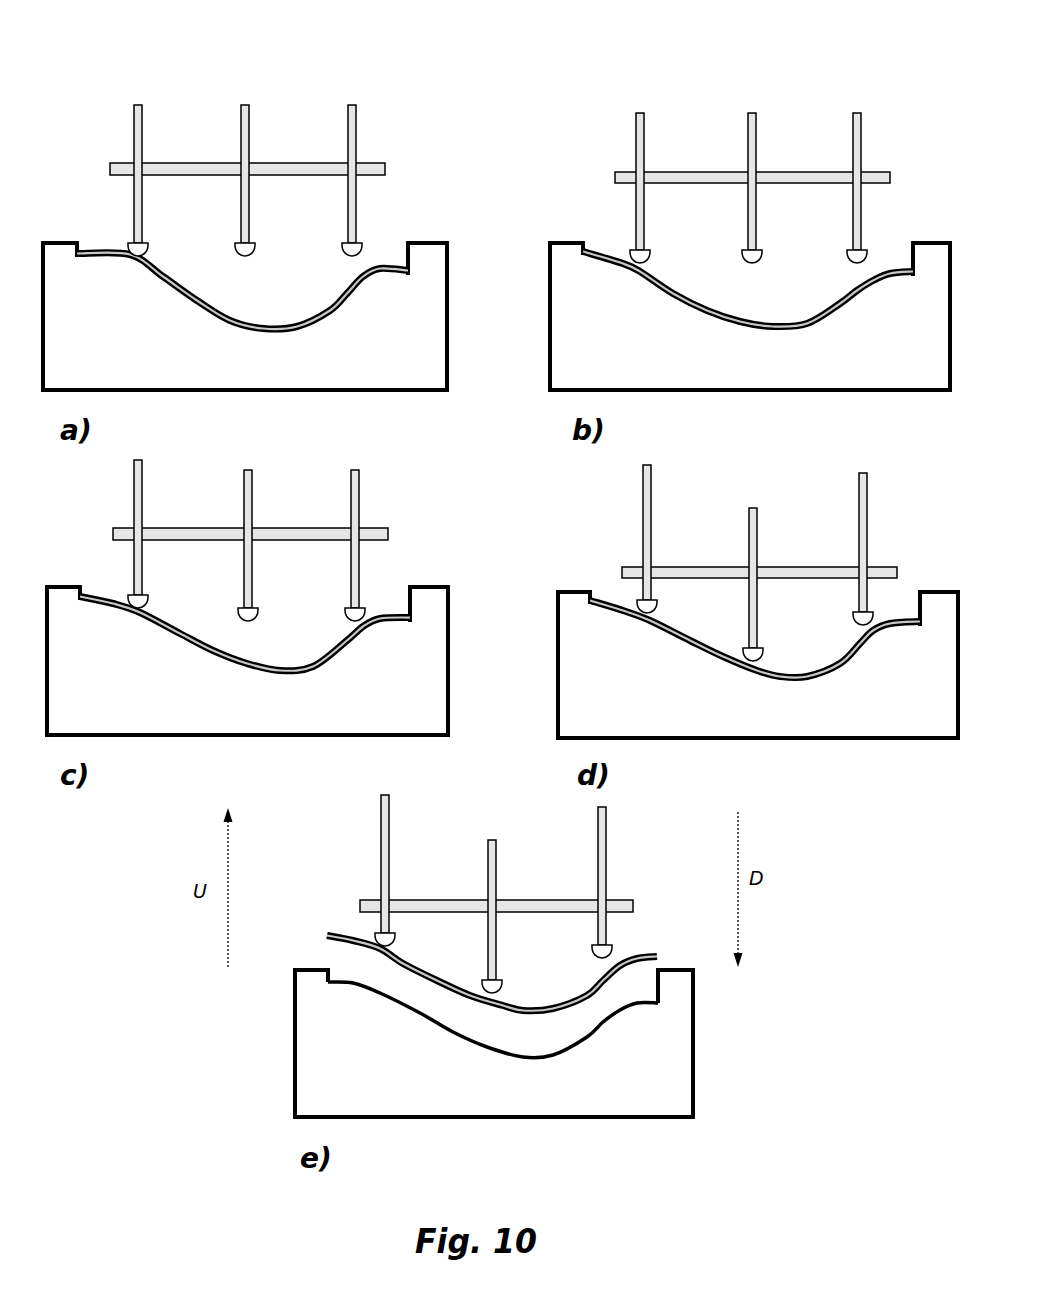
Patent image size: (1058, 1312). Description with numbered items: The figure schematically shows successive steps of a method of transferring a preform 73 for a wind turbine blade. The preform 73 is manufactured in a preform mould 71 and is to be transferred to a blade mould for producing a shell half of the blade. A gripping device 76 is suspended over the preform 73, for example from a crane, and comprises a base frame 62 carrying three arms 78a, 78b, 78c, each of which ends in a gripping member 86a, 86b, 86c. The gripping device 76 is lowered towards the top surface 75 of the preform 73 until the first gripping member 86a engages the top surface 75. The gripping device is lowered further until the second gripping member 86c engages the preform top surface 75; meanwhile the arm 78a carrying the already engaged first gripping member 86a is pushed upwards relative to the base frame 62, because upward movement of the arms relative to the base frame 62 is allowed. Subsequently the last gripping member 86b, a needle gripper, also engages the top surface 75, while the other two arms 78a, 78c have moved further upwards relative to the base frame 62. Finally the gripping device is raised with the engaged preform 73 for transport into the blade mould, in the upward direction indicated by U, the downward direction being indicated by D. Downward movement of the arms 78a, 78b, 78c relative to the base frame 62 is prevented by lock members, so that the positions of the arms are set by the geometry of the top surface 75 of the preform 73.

The base frame 62 is at (110, 167).
The preform mould 71 is at (412, 372).
The preform 73 is at (498, 629).
The top surface 75 is at (303, 306).
The gripping device 76 is at (489, 507).
The arm 78a is at (134, 108).
The arm 78b is at (241, 108).
The arm 78c is at (348, 108).
The first gripping member 86a is at (149, 245).
The gripping member 86b is at (256, 244).
The second gripping member 86c is at (363, 244).